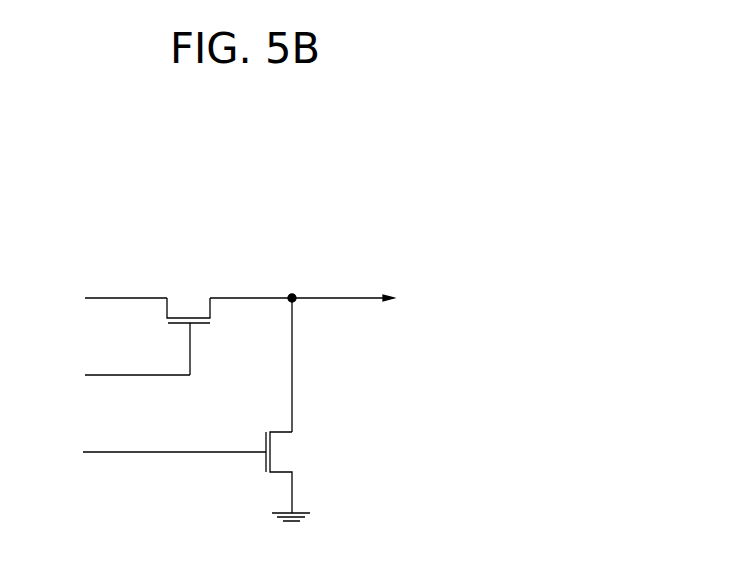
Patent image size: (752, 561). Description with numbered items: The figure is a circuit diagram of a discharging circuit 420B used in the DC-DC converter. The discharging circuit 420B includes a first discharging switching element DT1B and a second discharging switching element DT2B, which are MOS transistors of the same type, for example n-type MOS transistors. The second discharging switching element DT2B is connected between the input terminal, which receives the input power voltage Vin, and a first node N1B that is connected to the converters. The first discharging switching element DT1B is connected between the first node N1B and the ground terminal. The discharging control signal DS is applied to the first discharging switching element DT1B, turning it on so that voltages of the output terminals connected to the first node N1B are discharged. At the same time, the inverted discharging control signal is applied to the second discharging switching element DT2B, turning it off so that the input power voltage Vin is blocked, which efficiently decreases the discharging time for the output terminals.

The discharging circuit 420B is at (342, 251).
The second discharging switching element DT2B is at (189, 324).
The first discharging switching element DT1B is at (296, 476).
The first node N1B is at (302, 352).
The input power voltage Vin is at (106, 298).
The discharging control signal DS is at (159, 454).